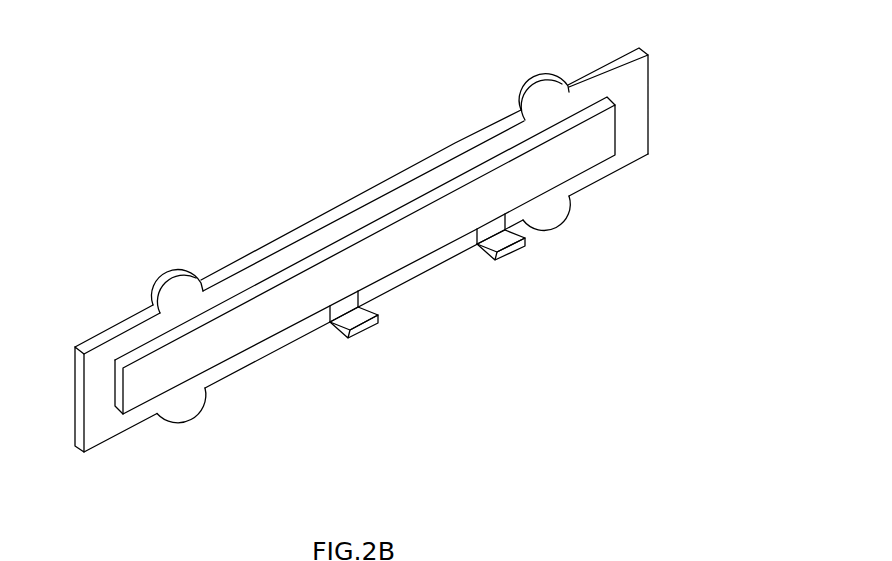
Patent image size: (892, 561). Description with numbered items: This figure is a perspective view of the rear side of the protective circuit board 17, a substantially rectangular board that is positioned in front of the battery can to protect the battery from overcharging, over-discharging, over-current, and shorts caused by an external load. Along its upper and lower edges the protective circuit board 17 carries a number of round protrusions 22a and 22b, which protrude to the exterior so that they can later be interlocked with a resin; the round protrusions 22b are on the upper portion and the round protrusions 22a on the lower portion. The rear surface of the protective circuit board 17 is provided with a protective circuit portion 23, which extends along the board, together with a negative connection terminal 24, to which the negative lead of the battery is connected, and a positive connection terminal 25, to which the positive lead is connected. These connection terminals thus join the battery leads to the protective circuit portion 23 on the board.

The protective circuit board 17 is at (368, 222).
The round protrusion 22a is at (185, 408).
The round protrusion 22b is at (185, 287).
The protective circuit portion 23 is at (258, 329).
The negative connection terminal 24 is at (381, 317).
The positive connection terminal 25 is at (530, 240).